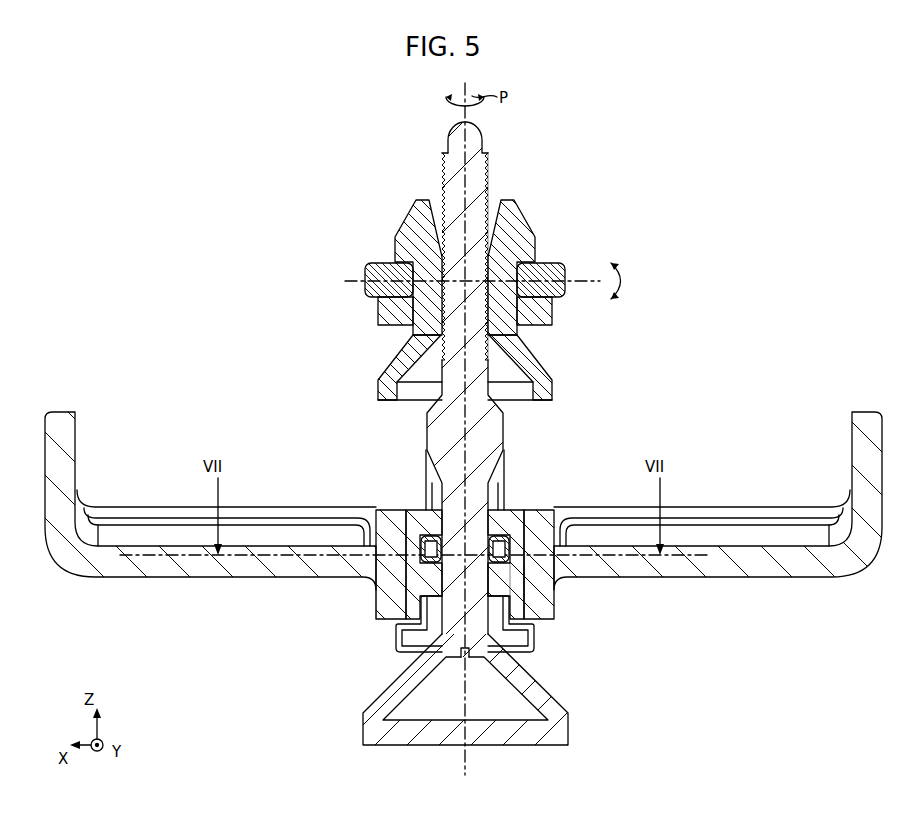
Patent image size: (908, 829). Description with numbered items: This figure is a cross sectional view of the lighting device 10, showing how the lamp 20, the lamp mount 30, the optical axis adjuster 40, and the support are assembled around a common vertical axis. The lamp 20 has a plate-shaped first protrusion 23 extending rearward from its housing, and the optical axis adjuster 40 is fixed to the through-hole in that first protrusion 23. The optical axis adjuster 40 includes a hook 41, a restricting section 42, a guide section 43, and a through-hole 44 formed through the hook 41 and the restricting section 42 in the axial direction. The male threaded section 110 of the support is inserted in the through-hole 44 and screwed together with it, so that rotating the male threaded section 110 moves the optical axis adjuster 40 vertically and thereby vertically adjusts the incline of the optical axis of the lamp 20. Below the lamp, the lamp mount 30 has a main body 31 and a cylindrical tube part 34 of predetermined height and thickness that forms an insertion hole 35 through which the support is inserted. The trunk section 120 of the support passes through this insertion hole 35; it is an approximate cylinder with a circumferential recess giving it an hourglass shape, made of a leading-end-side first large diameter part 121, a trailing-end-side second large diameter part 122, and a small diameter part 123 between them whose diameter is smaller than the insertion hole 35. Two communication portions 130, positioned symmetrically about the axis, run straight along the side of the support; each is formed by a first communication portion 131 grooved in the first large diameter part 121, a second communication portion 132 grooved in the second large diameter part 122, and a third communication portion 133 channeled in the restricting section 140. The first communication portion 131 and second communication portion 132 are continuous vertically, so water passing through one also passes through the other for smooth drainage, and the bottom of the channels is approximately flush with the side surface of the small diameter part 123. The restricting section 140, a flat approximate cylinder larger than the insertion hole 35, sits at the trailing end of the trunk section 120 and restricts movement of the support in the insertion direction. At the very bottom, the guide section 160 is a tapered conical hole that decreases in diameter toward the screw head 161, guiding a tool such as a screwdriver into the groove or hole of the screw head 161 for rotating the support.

The lighting device 10 is at (768, 186).
The male threaded section 110 is at (457, 181).
The through-hole 44 is at (496, 203).
The insertion hole 35 is at (516, 502).
The optical axis adjuster 40 is at (306, 235).
The hook 41 is at (396, 236).
The restricting section 42 is at (388, 311).
The guide section 43 is at (400, 360).
The first protrusion 23 is at (550, 262).
The lamp 20 is at (483, 239).
The main body 31 is at (713, 563).
The lamp mount 30 is at (463, 501).
The cylindrical tube part 34 is at (376, 602).
The communication portion 130 is at (426, 525).
The first communication portion 131 is at (437, 513).
The second communication portion 132 is at (419, 585).
The third communication portion 133 is at (398, 615).
The trunk section 120 is at (648, 587).
The first large diameter part 121 is at (490, 577).
The second large diameter part 122 is at (513, 578).
The small diameter part 123 is at (523, 573).
The restricting section 140 is at (527, 638).
The guide section 160 is at (557, 723).
The screw head 161 is at (462, 660).